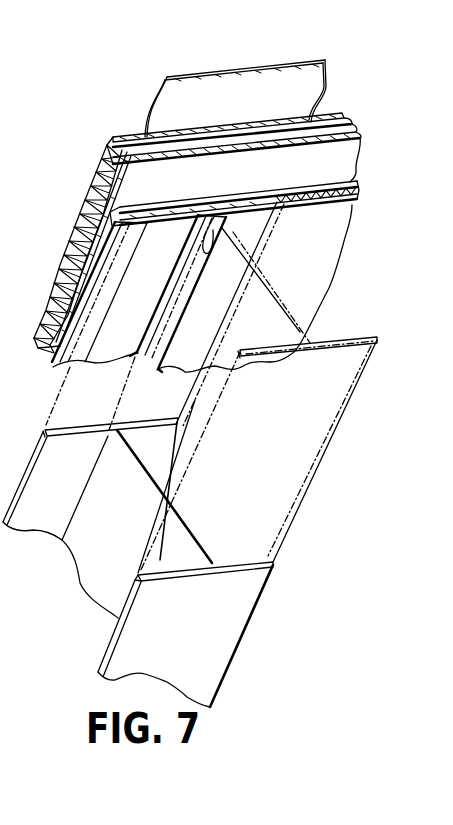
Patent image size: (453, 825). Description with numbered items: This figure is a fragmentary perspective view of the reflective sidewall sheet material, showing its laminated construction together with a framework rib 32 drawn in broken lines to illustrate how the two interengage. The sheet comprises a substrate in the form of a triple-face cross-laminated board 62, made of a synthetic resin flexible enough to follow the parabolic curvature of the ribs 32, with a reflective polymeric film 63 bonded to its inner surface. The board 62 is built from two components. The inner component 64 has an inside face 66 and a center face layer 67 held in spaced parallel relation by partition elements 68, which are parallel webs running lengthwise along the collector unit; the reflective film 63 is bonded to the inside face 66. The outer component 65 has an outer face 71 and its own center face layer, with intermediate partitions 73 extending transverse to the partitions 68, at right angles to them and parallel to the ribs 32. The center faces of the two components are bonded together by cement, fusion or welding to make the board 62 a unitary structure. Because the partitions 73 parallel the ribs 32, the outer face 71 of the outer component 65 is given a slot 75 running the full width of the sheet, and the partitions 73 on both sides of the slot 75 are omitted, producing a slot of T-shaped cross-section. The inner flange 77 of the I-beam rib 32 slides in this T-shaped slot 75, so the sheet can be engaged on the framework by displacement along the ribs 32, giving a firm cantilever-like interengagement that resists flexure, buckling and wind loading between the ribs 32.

The reflective polymeric film 63 is at (256, 83).
The inside face 66 is at (115, 136).
The inner component 64 is at (108, 163).
The center face layer 67 is at (122, 185).
The partition elements 68 is at (88, 230).
The triple-face cross-laminated board 62 is at (43, 308).
The partitions 73 is at (307, 187).
The slot 75 is at (221, 214).
The outer component 65 is at (347, 205).
The outer face 71 is at (310, 247).
The inner flange 77 is at (139, 401).
The ribs 32 is at (128, 643).